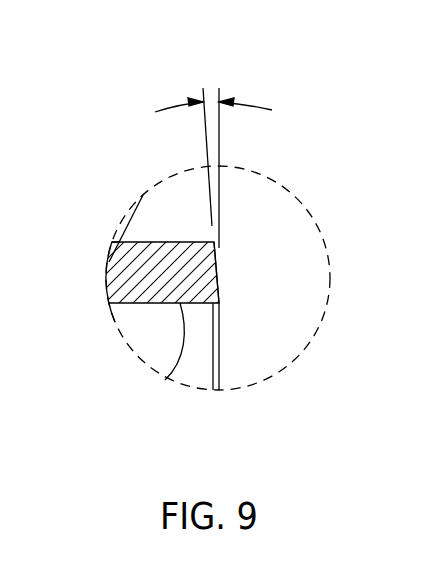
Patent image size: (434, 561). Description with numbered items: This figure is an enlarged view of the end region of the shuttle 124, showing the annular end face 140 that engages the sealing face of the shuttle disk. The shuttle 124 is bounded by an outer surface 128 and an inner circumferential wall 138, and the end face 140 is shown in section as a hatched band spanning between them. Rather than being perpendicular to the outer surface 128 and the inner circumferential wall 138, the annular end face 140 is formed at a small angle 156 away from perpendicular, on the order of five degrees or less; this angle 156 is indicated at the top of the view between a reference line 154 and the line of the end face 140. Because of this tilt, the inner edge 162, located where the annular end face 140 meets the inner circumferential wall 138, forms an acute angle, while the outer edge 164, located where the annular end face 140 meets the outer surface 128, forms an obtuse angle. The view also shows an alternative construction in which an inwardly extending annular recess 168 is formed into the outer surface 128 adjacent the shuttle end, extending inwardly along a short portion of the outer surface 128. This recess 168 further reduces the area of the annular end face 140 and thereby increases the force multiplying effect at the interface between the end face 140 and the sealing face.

The shuttle 124 is at (150, 333).
The outer surface 128 is at (110, 251).
The inner circumferential wall 138 is at (177, 378).
The annular end face 140 is at (220, 275).
The first edge line 154 is at (187, 240).
The angle 156 is at (209, 92).
The inner edge 162 is at (220, 302).
The outer edge 164 is at (223, 238).
The annular recess 168 is at (160, 240).